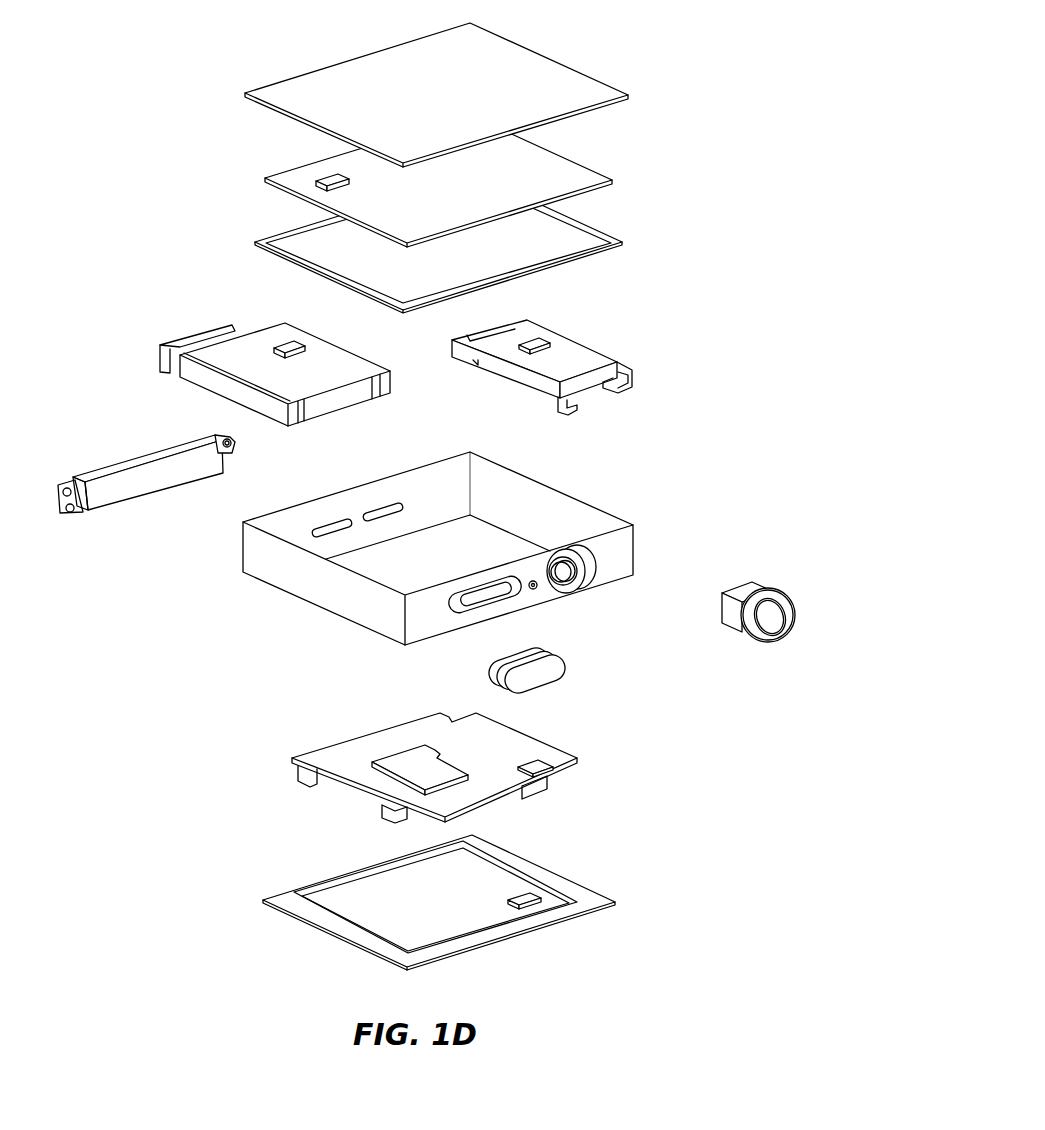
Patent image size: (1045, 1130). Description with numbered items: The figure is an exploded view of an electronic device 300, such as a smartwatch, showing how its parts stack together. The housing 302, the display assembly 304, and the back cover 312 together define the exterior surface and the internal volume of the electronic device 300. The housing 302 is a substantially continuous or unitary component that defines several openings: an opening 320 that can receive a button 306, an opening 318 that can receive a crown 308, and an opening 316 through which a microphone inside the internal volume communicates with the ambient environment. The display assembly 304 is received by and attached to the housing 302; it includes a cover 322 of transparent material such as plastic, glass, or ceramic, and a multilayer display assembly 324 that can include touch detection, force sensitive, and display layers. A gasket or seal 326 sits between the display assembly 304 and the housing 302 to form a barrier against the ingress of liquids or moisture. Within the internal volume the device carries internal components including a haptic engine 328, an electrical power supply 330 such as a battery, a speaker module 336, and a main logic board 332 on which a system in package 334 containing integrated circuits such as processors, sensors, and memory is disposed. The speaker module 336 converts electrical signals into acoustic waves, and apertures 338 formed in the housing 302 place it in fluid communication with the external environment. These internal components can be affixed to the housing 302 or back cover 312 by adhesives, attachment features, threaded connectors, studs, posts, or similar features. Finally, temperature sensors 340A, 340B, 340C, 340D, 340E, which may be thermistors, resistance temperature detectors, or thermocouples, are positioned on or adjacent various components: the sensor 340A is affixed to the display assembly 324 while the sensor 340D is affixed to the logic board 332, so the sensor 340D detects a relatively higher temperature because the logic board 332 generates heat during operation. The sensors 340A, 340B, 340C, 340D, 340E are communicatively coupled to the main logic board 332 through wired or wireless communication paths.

The electronic device 300 is at (832, 57).
The housing 302 is at (572, 507).
The display assembly 304 is at (660, 97).
The button 306 is at (537, 690).
The crown 308 is at (783, 595).
The back cover 312 is at (598, 898).
The opening 316 is at (540, 597).
The opening 318 is at (572, 572).
The opening 320 is at (467, 615).
The cover 322 is at (273, 90).
The display assembly 324 is at (283, 182).
The gasket or seal 326 is at (277, 237).
The haptic engine 328 is at (583, 353).
The electrical power supply 330 is at (187, 375).
The logic board 332 is at (313, 805).
The system in package 334 is at (403, 760).
The speaker module 336 is at (113, 508).
The apertures 338 is at (383, 507).
The sensor 340A is at (332, 173).
The sensor 340B is at (287, 342).
The sensor 340C is at (537, 338).
The sensor 340D is at (540, 762).
The sensor 340E is at (528, 893).